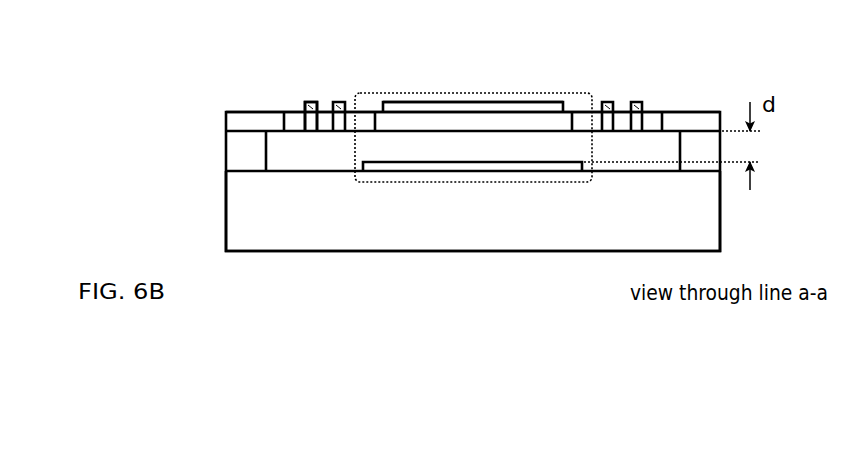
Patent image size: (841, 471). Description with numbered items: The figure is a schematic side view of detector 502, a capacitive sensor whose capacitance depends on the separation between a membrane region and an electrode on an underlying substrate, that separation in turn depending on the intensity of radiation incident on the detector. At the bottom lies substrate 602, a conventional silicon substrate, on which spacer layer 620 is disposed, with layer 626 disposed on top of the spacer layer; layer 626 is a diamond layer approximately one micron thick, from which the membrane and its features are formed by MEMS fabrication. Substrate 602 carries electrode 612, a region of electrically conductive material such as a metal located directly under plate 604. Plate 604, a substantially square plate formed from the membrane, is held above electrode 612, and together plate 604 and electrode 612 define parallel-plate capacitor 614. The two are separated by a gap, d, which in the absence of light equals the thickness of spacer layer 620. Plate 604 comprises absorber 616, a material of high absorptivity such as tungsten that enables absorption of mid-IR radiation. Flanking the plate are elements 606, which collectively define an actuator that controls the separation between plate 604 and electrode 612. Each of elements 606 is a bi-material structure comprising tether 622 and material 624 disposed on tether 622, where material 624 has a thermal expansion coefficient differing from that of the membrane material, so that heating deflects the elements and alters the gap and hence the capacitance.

The detector 502 is at (158, 58).
The substrate 602 is at (283, 237).
The plate 604 is at (432, 122).
The elements 606 is at (333, 83).
The electrode 612 is at (463, 165).
The parallel-plate capacitor 614 is at (482, 93).
The absorber 616 is at (502, 103).
The spacer layer 620 is at (226, 152).
The tether 622 is at (310, 120).
The material 624 is at (305, 103).
The layer 626 is at (205, 122).